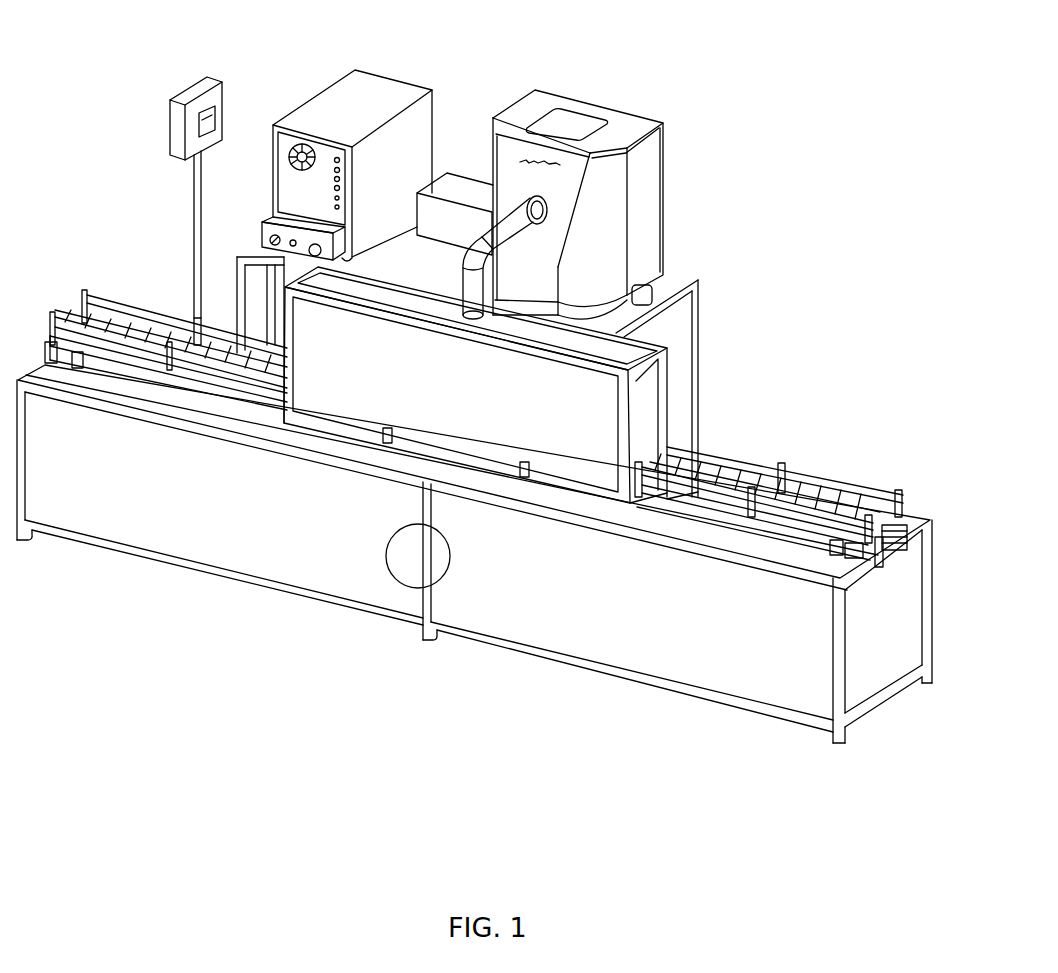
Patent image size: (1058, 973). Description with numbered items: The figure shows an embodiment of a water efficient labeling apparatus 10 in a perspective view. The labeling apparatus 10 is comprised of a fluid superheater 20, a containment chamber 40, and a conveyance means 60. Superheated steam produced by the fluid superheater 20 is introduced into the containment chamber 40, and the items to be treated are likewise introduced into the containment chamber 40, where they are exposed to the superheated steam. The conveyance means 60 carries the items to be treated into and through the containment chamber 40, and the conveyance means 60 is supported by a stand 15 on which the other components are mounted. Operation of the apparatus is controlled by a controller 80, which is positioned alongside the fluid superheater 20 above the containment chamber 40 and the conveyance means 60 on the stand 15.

The labeling apparatus 10 is at (243, 619).
The stand 15 is at (565, 610).
The fluid superheater 20 is at (660, 105).
The containment chamber 40 is at (677, 412).
The conveyance means 60 is at (73, 305).
The controller 80 is at (312, 83).